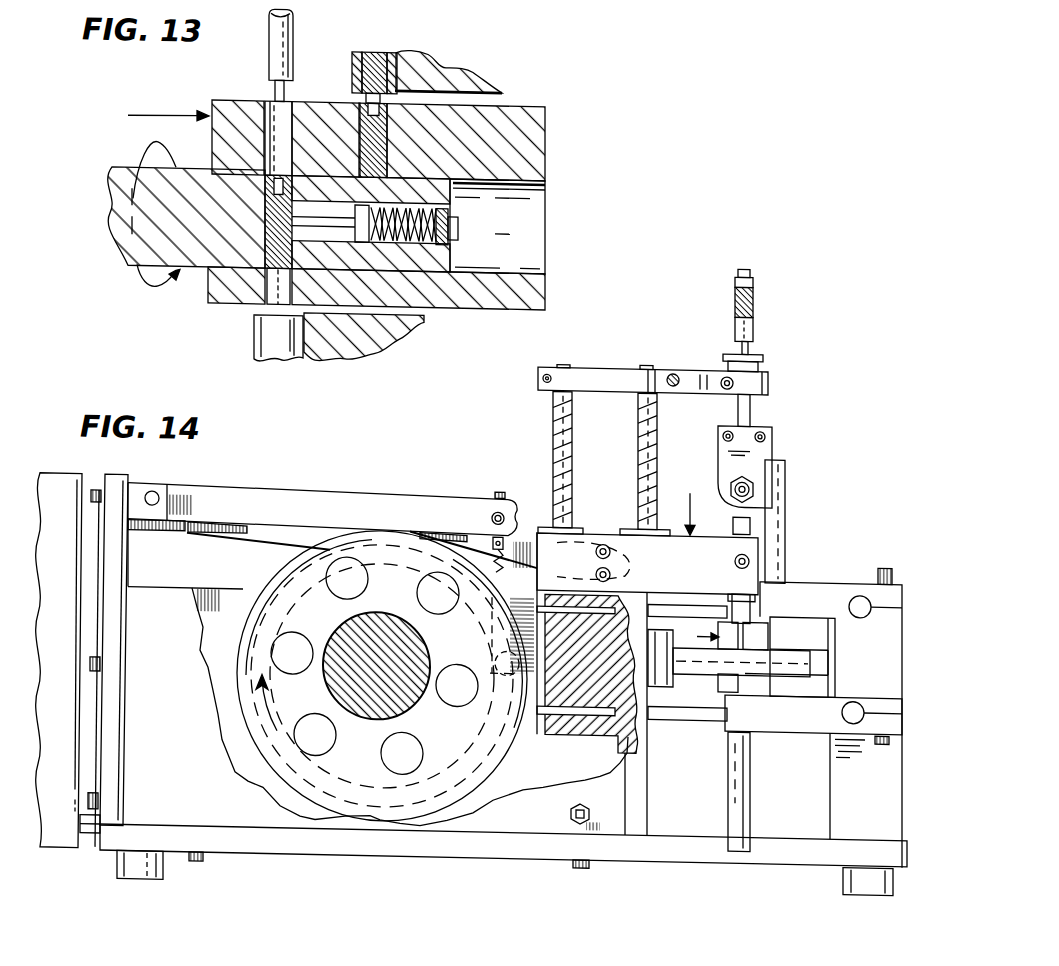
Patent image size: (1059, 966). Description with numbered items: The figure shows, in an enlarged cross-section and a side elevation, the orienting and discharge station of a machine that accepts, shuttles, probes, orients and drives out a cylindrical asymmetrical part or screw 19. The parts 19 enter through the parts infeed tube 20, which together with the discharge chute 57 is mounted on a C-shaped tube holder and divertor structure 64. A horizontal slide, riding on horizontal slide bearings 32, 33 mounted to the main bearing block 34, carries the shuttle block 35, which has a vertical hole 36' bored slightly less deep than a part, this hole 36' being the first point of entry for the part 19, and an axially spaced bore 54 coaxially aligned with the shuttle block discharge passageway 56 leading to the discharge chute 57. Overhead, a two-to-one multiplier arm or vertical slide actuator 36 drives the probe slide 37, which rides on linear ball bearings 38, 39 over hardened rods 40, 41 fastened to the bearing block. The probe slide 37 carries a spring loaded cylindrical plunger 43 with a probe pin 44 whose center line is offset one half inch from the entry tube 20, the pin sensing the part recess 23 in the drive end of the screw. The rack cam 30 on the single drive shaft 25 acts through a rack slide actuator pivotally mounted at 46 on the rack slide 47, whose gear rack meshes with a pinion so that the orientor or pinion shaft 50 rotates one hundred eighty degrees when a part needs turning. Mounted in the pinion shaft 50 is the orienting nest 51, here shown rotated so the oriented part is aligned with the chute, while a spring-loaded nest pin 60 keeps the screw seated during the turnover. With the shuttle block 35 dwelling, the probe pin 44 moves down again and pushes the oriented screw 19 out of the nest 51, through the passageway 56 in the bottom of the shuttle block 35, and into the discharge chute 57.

In FIG. 13, the part or screw 19 is at (377, 50).
In FIG. 13, the parts infeed tube or passageway 20 is at (411, 49).
In FIG. 14, the parts infeed tube or passageway 20 is at (787, 484).
In FIG. 13, the part recess 23 is at (262, 143).
In FIG. 14, the drive shaft 25 is at (370, 688).
In FIG. 14, the rack cam 30 is at (362, 530).
In FIG. 14, the horizontal slide bearing 32 is at (620, 582).
In FIG. 14, the horizontal slide bearing 33 is at (614, 700).
In FIG. 14, the main bearing block 34 is at (581, 680).
In FIG. 13, the shuttle block 35 is at (545, 136).
In FIG. 14, the shuttle block 35 is at (810, 615).
In FIG. 14, the vertical slide actuator 36 is at (332, 538).
In FIG. 13, the vertical hole or passageway 36' is at (466, 133).
In FIG. 14, the vertical hole or passageway 36' is at (805, 599).
In FIG. 14, the probe slide 37 is at (690, 570).
In FIG. 14, the linear ball bearing 38 is at (575, 520).
In FIG. 14, the linear ball bearing 39 is at (652, 518).
In FIG. 14, the hardened rod 40 is at (572, 452).
In FIG. 14, the hardened rod 41 is at (657, 444).
In FIG. 13, the spring loaded cylindrical plunger 43 is at (294, 33).
In FIG. 14, the spring loaded cylindrical plunger 43 is at (748, 596).
In FIG. 13, the probe pin 44 is at (285, 89).
In FIG. 14, the pivot 46 is at (255, 500).
In FIG. 14, the rack slide 47 is at (154, 490).
In FIG. 13, the orientor or pinion shaft 50 is at (117, 218).
In FIG. 14, the orientor or pinion shaft 50 is at (710, 652).
In FIG. 13, the orienting nest 51 is at (292, 162).
In FIG. 13, the shuttle block bore or passageway 54 is at (265, 100).
In FIG. 14, the shuttle block bore or passageway 54 is at (743, 619).
In FIG. 13, the shuttle block discharge passageway 56 is at (250, 304).
In FIG. 14, the shuttle block discharge passageway 56 is at (742, 680).
In FIG. 13, the discharge chute 57 is at (283, 362).
In FIG. 14, the discharge chute 57 is at (745, 840).
In FIG. 13, the spring-loaded nest pin 60 is at (418, 305).
In FIG. 14, the C-shaped tube holder and divertor structure 64 is at (908, 572).